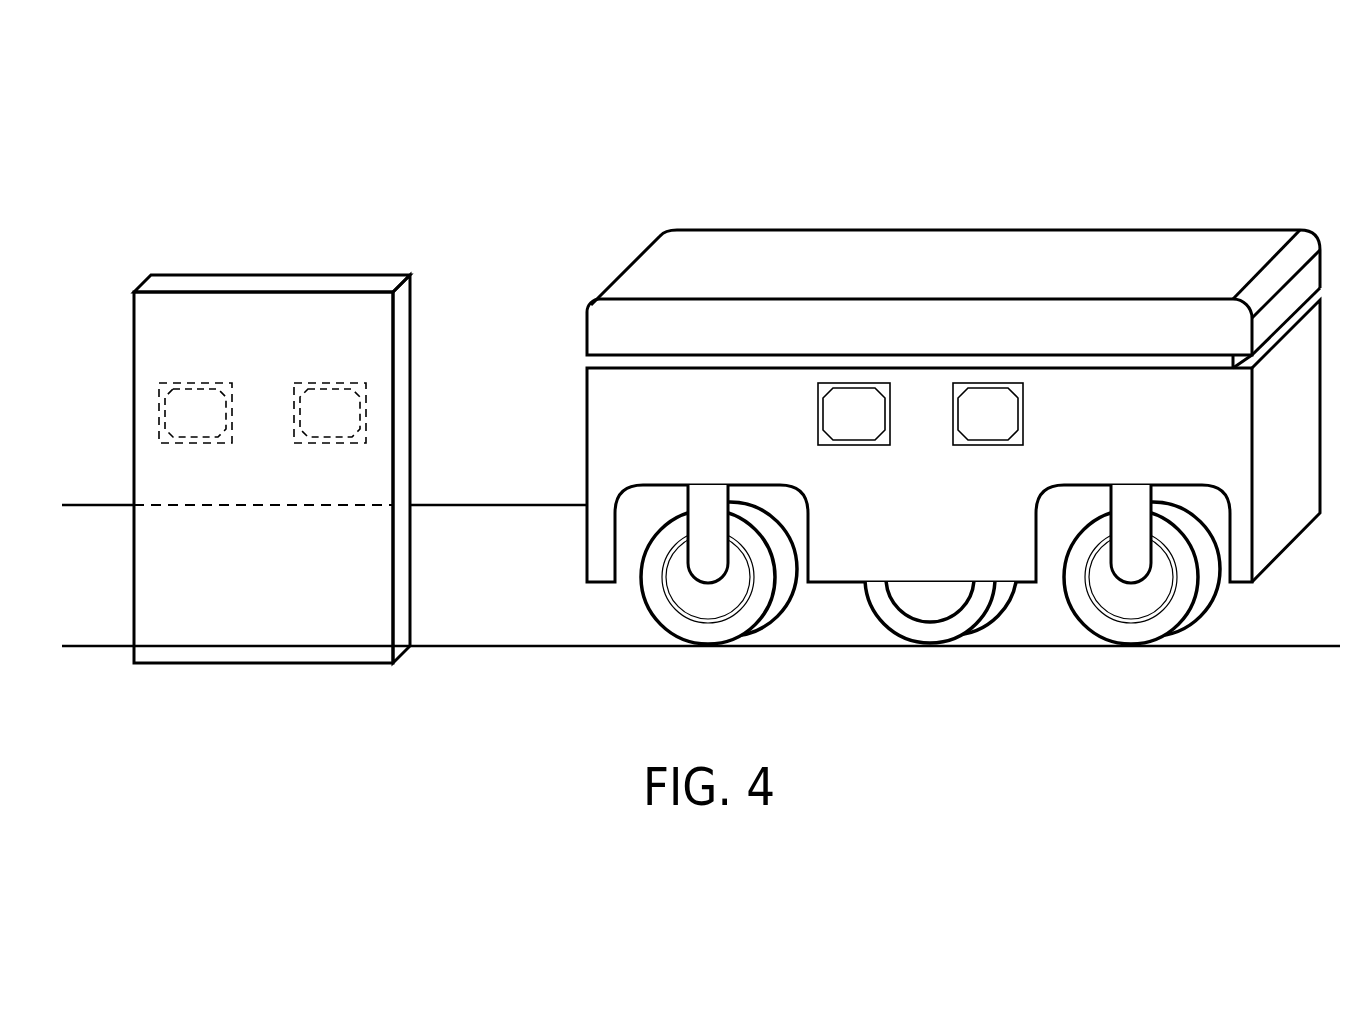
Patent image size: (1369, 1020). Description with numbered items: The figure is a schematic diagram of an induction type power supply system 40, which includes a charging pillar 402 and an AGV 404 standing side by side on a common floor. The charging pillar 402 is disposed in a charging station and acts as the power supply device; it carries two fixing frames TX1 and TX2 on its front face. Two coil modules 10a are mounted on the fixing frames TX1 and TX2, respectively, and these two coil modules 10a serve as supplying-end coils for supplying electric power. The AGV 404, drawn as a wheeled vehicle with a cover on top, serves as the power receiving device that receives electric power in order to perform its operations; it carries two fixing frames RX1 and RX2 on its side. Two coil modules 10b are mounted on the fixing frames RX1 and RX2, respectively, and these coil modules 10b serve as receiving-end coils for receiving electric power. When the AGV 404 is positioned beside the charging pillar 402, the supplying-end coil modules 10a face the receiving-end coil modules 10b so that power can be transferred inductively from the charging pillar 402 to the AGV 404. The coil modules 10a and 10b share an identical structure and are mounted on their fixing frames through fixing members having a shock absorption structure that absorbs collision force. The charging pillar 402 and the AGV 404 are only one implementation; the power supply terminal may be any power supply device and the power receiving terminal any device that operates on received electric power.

The induction type power supply system 40 is at (1222, 110).
The charging pillar 402 is at (180, 275).
The AGV 404 is at (1210, 228).
The fixing frame TX1 is at (190, 383).
The fixing frame TX2 is at (335, 383).
The fixing frame RX1 is at (857, 383).
The fixing frame RX2 is at (990, 383).
The coil module 10a is at (218, 427).
The coil module 10b is at (877, 429).